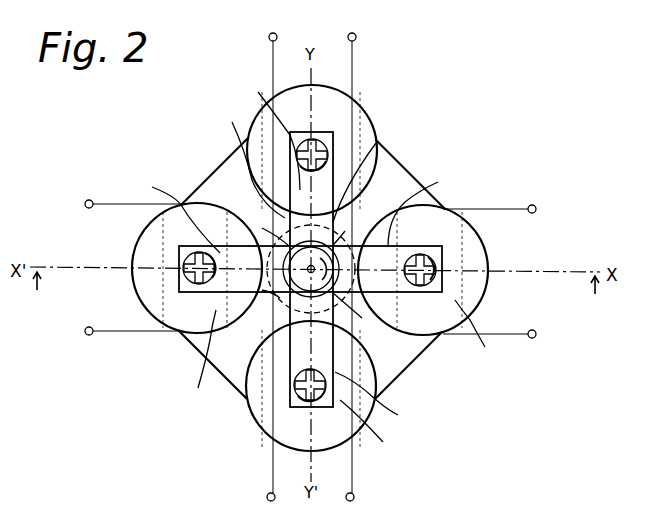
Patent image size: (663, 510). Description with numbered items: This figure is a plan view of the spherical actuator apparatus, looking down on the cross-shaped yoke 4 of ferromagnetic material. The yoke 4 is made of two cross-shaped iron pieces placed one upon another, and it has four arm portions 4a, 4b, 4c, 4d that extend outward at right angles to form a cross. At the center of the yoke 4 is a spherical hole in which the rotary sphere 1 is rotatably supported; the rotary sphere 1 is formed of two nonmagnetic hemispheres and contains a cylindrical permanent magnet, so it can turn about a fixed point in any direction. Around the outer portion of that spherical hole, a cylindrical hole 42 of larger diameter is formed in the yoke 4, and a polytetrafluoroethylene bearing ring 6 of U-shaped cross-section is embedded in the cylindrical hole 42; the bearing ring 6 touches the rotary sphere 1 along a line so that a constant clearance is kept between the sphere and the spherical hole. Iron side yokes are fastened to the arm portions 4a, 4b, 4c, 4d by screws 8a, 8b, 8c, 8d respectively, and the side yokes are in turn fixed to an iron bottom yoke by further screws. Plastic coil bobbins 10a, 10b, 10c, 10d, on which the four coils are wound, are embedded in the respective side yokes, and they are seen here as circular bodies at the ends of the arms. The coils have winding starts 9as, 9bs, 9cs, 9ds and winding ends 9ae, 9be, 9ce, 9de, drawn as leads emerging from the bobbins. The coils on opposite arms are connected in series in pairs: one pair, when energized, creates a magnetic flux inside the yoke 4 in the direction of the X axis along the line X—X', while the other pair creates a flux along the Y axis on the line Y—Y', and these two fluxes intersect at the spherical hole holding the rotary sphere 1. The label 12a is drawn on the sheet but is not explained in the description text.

The rotary sphere 1 is at (333, 293).
The cross-shaped yoke 4 is at (417, 247).
The arm portion 4a is at (397, 195).
The arm portion 4b is at (246, 162).
The arm portion 4c is at (170, 215).
The arm portion 4d is at (379, 401).
The bearing ring 6 is at (287, 228).
The screw 8a is at (486, 337).
The screw 8b is at (265, 130).
The screw 8c is at (204, 359).
The screw 8d is at (374, 429).
The winding start 9as is at (535, 206).
The winding end 9ae is at (536, 337).
The winding start 9bs is at (268, 39).
The winding end 9be is at (356, 39).
The winding start 9cs is at (89, 335).
The winding end 9ce is at (88, 200).
The winding start 9ds is at (354, 497).
The winding end 9de is at (266, 498).
The coil bobbin 10a is at (428, 332).
The coil bobbin 10b is at (365, 118).
The coil bobbin 10c is at (186, 320).
The coil bobbin 10d is at (266, 422).
The support surface 12a is at (394, 171).
The cylindrical hole 42 is at (275, 245).